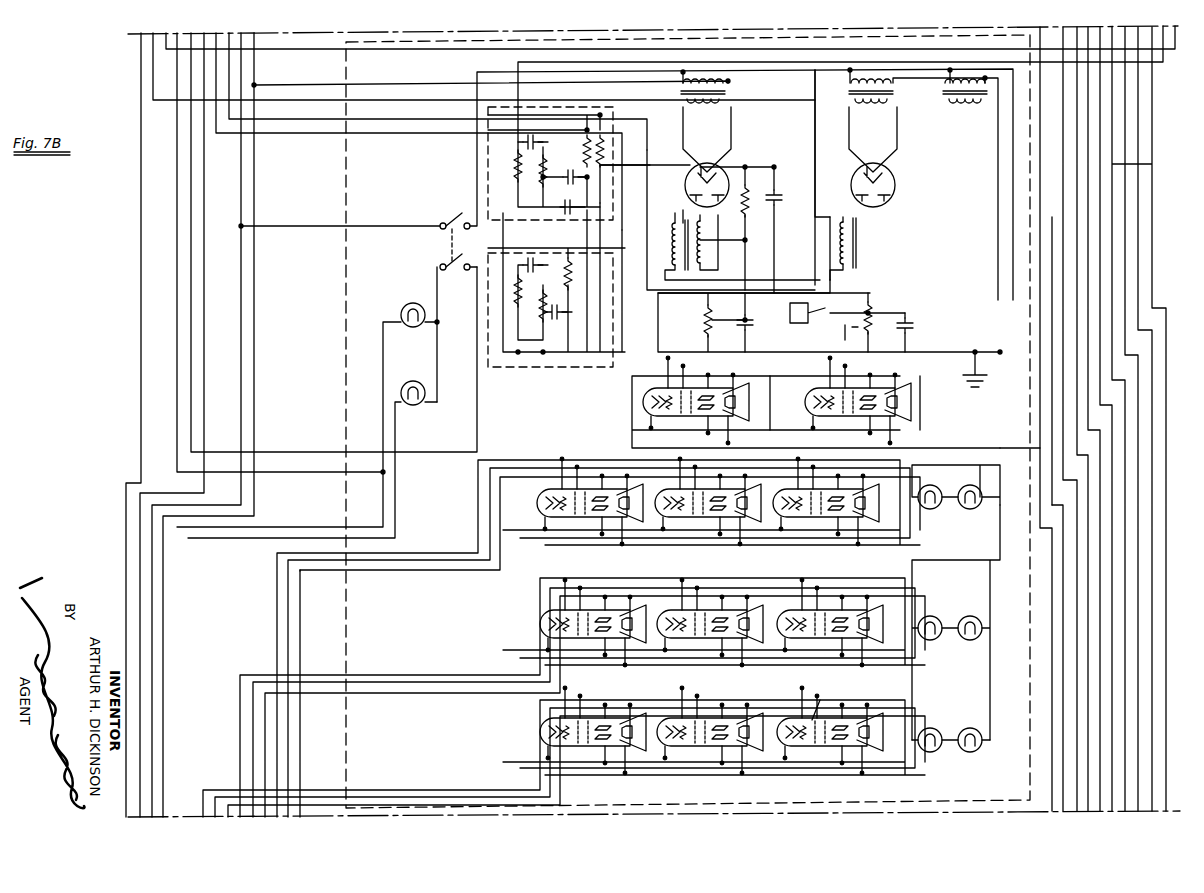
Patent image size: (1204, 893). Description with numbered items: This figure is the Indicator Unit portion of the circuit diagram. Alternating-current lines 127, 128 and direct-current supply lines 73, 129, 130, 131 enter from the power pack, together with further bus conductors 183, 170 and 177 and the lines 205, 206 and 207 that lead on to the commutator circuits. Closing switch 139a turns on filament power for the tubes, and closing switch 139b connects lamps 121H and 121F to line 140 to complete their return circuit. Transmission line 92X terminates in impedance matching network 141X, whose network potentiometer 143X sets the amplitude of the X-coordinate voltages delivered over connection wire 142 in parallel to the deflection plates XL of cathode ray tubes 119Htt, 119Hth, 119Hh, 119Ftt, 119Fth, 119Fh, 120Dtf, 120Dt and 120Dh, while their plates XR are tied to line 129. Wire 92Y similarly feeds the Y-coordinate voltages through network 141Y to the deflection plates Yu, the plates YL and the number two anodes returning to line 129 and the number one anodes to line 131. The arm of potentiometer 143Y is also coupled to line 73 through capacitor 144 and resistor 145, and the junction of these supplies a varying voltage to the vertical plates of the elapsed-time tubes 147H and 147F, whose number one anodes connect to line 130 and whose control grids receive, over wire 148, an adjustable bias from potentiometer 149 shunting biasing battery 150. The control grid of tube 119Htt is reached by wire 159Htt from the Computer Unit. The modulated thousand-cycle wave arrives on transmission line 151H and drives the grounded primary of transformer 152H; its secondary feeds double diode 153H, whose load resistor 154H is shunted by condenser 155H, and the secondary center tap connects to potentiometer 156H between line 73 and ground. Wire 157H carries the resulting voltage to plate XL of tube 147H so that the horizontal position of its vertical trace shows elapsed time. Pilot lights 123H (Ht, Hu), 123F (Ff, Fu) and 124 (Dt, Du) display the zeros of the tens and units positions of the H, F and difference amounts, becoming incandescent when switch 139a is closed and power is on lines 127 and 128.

The bus conductor 183 is at (141, 84).
The transmission line 151H is at (153, 57).
The bus conductor 170 is at (204, 82).
The line 131 is at (177, 165).
The line 130 is at (191, 205).
The line 127 is at (241, 173).
The line 128 is at (254, 200).
The line 129 is at (290, 133).
The line 73 is at (323, 133).
The wire 92Y is at (505, 98).
The transmission line 92X is at (630, 98).
The network 141Y is at (488, 150).
The potentiometer 143Y is at (546, 175).
The capacitor 144 is at (565, 205).
The resistor 145 is at (645, 156).
The impedance matching network 141X is at (488, 365).
The line 140 is at (488, 360).
The network potentiometer 143X is at (552, 315).
The connection wire 142 is at (570, 388).
The switch 139a is at (452, 210).
The switch 139b is at (440, 270).
The light 121H is at (413, 327).
The light 121F is at (416, 405).
The transformer 152H is at (738, 239).
The double diode 153H is at (718, 242).
The load resistor 154H is at (744, 172).
The condenser 155H is at (762, 195).
The wire 157H is at (805, 250).
The potentiometer 156H is at (829, 322).
The cathode ray tube 147H is at (678, 385).
The biasing battery 150 is at (805, 318).
The potentiometer 149 is at (867, 322).
The wire 148 is at (828, 350).
The deflection plate XL is at (760, 418).
The cathode ray tube 147F is at (878, 420).
The cathode ray tube 119Htt is at (566, 486).
The cathode ray tube 119Hth is at (703, 535).
The cathode ray tube 119Hh is at (835, 535).
The cathode ray tube 119Ftt is at (543, 618).
The cathode ray tube 119Fth is at (695, 650).
The cathode ray tube 119Fh is at (838, 648).
The deflection plate Yu is at (830, 725).
The cathode ray tube 120Dtf is at (543, 732).
The cathode ray tube 120Dt is at (722, 750).
The cathode ray tube 120Dh is at (820, 770).
The deflection plate XR is at (865, 738).
The deflection plate YL is at (840, 740).
The pilot lights 123H is at (964, 488).
The lamp Ht is at (930, 525).
The lamp Hu is at (969, 525).
The pilot lights 123F is at (968, 640).
The lamp Ff is at (929, 600).
The lamp Fu is at (970, 600).
The pilot lights 124 is at (968, 728).
The lamp Dt is at (928, 763).
The lamp Du is at (972, 763).
The bus conductor 177 is at (1064, 757).
The line 205 is at (1150, 200).
The line 206 is at (1140, 255).
The line 207 is at (1100, 302).
The wire 159Htt is at (408, 553).